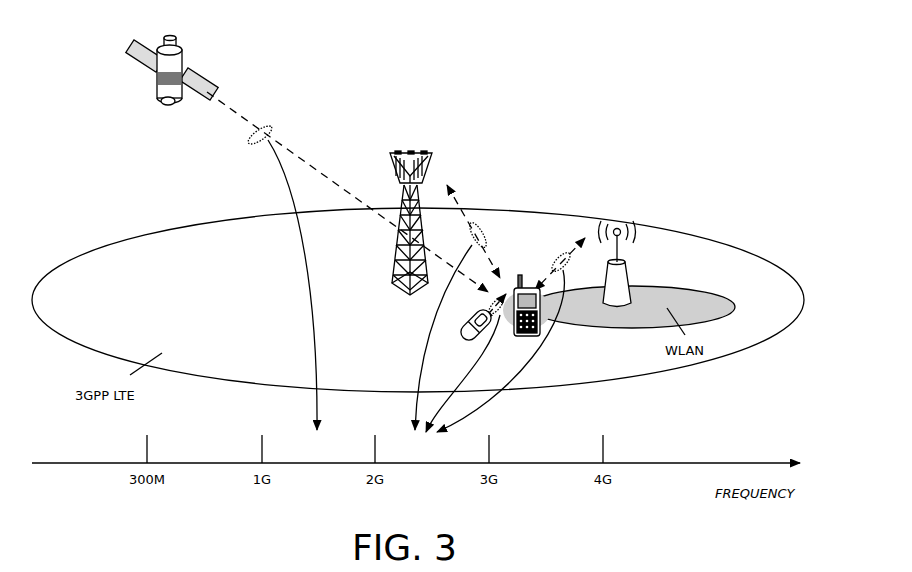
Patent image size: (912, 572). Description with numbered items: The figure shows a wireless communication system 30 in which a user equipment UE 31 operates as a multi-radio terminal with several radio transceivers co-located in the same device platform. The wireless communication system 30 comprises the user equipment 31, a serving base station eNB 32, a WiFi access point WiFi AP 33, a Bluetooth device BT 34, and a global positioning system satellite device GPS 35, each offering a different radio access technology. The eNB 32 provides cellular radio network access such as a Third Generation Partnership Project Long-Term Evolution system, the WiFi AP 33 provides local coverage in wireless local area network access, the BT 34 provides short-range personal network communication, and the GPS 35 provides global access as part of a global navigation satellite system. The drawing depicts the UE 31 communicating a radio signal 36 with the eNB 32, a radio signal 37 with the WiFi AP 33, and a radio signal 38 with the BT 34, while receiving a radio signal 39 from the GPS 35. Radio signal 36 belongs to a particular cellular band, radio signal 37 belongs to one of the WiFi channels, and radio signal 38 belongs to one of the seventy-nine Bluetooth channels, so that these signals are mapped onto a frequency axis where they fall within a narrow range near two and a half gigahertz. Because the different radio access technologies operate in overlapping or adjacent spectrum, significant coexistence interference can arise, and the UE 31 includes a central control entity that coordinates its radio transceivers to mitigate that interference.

The wireless communication system 30 is at (746, 62).
The user equipment 31 is at (521, 338).
The serving base station eNB 32 is at (408, 150).
The WiFi access point 33 is at (616, 228).
The Bluetooth device 34 is at (466, 338).
The global positioning system satellite device 35 is at (167, 105).
The radio signal 36 is at (484, 225).
The radio signal 37 is at (556, 248).
The radio signal 38 is at (487, 304).
The radio signal 39 is at (266, 125).